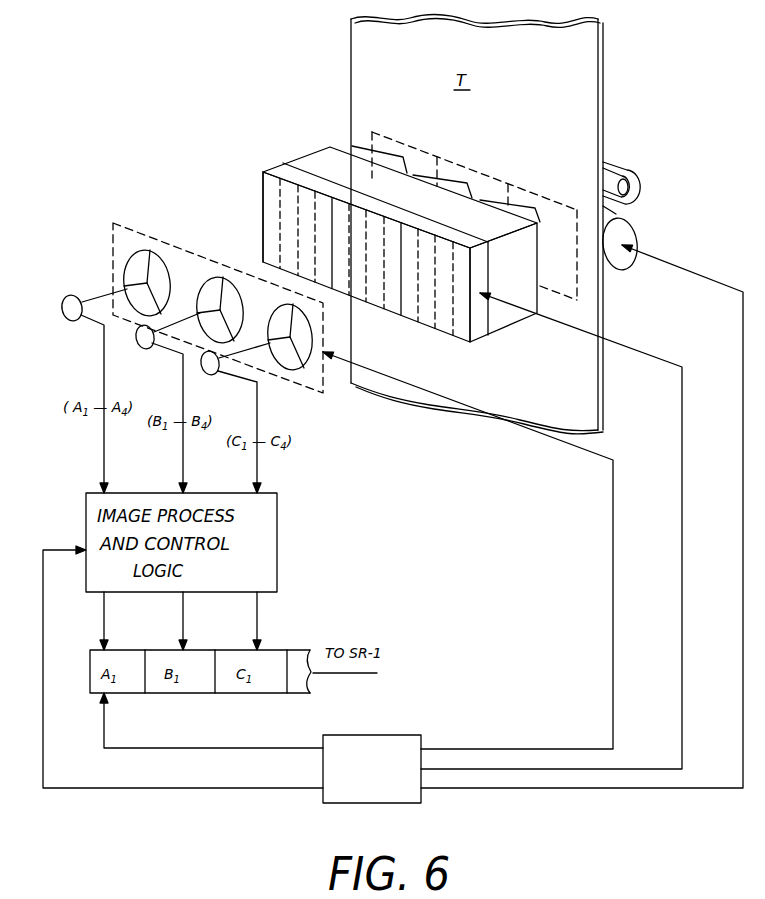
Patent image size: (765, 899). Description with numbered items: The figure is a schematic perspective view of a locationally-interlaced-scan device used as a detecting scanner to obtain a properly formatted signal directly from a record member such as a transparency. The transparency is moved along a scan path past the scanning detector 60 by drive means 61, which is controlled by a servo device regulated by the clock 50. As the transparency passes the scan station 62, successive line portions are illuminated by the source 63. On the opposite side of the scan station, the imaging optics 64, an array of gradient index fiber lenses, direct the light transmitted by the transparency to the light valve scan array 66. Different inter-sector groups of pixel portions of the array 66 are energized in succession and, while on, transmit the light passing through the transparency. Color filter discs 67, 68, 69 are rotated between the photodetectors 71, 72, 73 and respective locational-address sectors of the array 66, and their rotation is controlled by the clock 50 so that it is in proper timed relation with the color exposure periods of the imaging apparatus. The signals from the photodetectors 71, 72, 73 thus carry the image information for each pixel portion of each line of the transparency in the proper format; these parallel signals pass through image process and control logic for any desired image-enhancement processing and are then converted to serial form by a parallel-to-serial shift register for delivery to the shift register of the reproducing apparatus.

The clock 50 is at (392, 735).
The scanning detector 60 is at (200, 98).
The drive means 61 is at (636, 239).
The scan station 62 is at (358, 147).
The source 63 is at (640, 184).
The imaging optics 64 is at (313, 162).
The light valve scan array 66 is at (268, 172).
The color filter disc 67 is at (150, 250).
The color filter disc 68 is at (223, 277).
The color filter disc 69 is at (316, 340).
The photodetector 71 is at (66, 321).
The photodetector 72 is at (143, 349).
The photodetector 73 is at (210, 375).